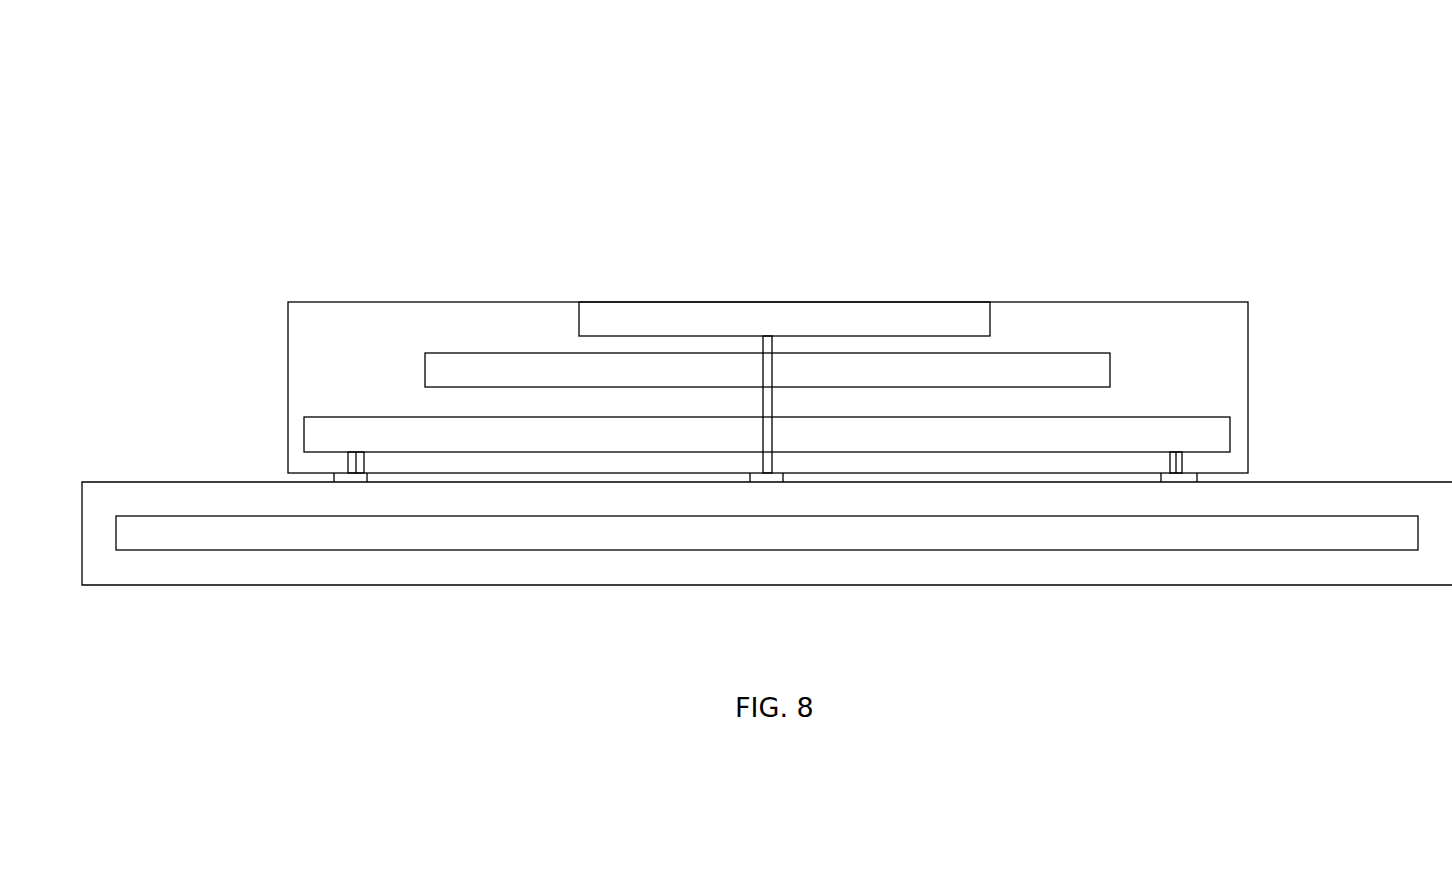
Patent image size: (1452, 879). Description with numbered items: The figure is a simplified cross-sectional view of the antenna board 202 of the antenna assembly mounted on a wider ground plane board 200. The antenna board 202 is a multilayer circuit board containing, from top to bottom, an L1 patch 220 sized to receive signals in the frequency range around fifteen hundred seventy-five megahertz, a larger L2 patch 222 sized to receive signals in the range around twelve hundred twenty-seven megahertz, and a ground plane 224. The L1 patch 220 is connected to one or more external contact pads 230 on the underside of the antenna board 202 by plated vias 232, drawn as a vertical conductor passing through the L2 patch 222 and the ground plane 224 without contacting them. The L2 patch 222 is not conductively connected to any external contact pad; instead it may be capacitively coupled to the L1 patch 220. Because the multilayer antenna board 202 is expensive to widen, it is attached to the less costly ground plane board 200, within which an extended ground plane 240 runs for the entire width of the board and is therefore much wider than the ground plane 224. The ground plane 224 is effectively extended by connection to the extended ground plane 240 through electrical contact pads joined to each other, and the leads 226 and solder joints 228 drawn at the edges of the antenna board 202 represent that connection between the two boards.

The ground plane board 200 is at (440, 614).
The antenna board 202 is at (660, 266).
The L1 patch 220 is at (947, 328).
The L2 patch 222 is at (1030, 367).
The ground plane 224 is at (1172, 462).
The leads 226 is at (366, 478).
The solder joints 228 is at (342, 465).
The external contact pads 230 is at (780, 473).
The plated vias 232 is at (762, 438).
The extended ground plane 240 is at (596, 532).